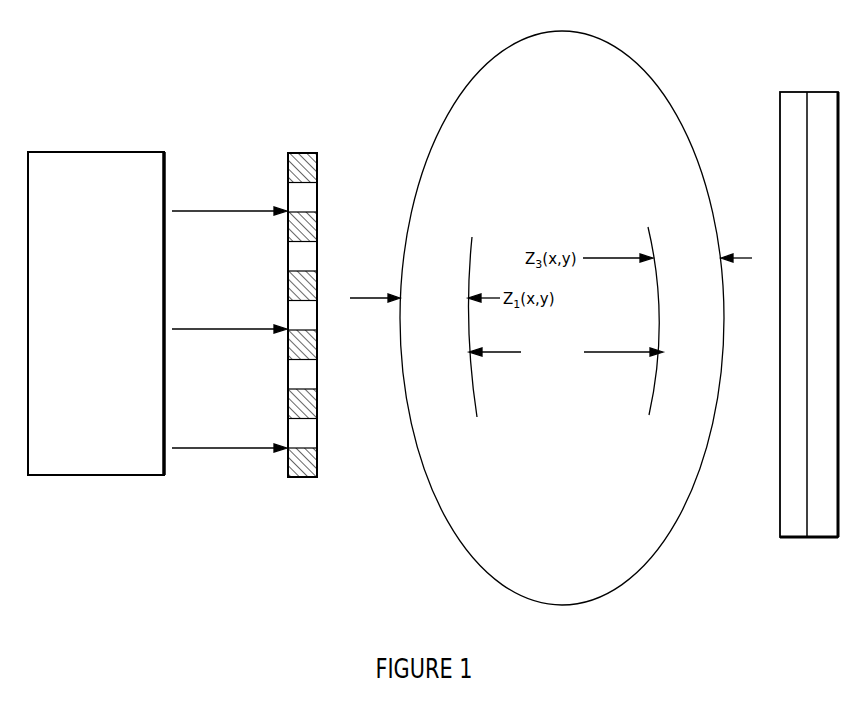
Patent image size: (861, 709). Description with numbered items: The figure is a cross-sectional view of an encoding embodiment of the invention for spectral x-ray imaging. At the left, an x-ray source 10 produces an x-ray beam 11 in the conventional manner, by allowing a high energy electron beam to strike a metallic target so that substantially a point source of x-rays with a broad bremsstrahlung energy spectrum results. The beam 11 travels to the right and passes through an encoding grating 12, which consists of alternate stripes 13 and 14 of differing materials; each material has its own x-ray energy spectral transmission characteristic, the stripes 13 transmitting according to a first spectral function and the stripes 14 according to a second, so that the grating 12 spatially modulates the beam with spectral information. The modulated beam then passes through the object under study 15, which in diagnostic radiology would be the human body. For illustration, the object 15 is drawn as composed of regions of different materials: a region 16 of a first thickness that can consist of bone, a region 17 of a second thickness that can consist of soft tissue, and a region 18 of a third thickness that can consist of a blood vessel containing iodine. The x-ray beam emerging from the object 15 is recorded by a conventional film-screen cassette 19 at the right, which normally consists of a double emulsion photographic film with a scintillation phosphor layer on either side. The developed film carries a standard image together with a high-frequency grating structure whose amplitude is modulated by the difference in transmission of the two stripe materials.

The x-ray source 10 is at (118, 152).
The x-ray beam 11 is at (229, 329).
The encoding grating 12 is at (291, 477).
The stripe 13 is at (326, 450).
The stripe 14 is at (327, 249).
The object under study 15 is at (613, 46).
The region 16 is at (413, 327).
The region 17 is at (566, 368).
The region 18 is at (700, 321).
The film-screen cassette 19 is at (807, 92).